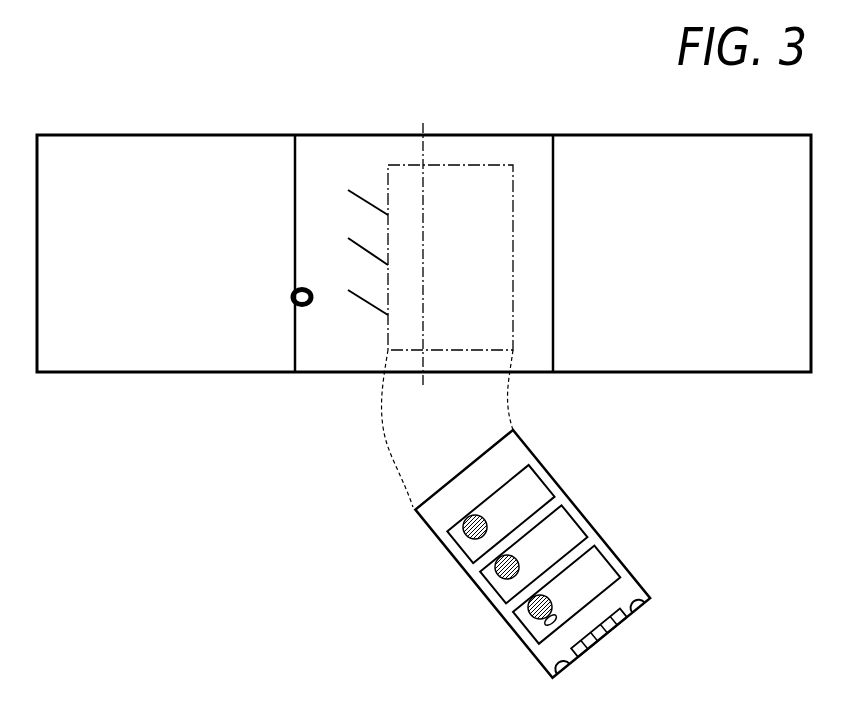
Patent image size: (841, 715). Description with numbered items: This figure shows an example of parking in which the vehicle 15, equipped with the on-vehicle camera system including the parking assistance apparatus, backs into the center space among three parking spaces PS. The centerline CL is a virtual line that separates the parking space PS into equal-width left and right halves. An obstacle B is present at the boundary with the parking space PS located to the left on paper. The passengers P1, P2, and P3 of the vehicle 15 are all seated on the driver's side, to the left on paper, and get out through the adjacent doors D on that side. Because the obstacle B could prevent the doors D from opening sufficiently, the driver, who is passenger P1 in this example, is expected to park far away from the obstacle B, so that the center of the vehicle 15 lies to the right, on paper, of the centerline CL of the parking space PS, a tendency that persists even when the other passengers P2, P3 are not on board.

The parking space PS is at (195, 134).
The centerline CL is at (422, 126).
The doors D is at (355, 198).
The obstacle B is at (291, 297).
The vehicle 15 is at (613, 513).
The passenger P1 is at (550, 600).
The passenger P2 is at (517, 560).
The passenger P3 is at (485, 520).